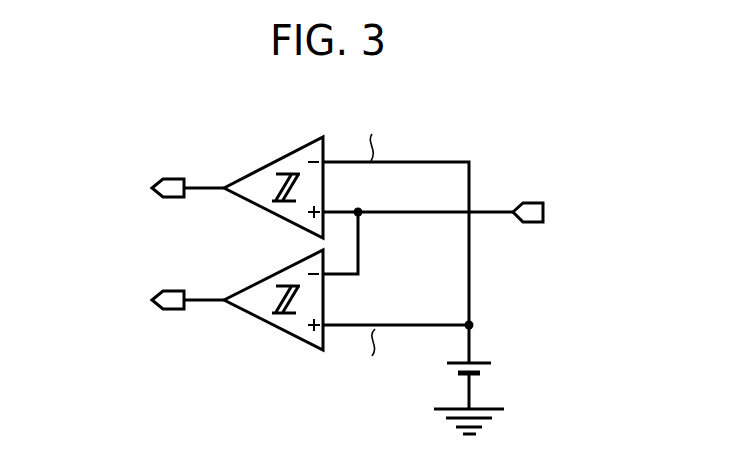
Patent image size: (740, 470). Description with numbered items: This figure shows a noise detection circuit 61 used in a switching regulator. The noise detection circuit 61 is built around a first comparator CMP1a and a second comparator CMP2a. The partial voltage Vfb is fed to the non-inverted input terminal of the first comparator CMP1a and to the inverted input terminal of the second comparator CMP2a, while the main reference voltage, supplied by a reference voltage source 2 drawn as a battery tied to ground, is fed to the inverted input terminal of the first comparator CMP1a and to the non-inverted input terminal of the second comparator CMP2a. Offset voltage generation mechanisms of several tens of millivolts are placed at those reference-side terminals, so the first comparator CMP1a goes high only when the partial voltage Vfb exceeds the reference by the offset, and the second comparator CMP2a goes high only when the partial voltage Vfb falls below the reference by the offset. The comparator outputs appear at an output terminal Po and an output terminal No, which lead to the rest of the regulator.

The noise detection circuit 61 is at (519, 143).
The reference voltage source 2 is at (502, 375).
The first comparator CMP1a is at (278, 128).
The second comparator CMP2a is at (263, 328).
The positive output terminal Po is at (176, 176).
The negative output terminal No is at (176, 288).
The partial voltage Vfb is at (527, 214).